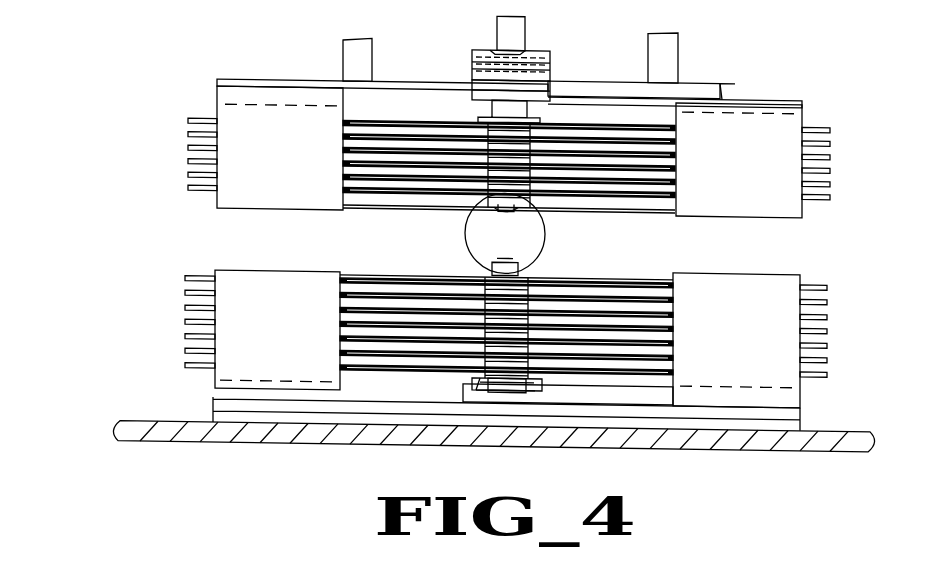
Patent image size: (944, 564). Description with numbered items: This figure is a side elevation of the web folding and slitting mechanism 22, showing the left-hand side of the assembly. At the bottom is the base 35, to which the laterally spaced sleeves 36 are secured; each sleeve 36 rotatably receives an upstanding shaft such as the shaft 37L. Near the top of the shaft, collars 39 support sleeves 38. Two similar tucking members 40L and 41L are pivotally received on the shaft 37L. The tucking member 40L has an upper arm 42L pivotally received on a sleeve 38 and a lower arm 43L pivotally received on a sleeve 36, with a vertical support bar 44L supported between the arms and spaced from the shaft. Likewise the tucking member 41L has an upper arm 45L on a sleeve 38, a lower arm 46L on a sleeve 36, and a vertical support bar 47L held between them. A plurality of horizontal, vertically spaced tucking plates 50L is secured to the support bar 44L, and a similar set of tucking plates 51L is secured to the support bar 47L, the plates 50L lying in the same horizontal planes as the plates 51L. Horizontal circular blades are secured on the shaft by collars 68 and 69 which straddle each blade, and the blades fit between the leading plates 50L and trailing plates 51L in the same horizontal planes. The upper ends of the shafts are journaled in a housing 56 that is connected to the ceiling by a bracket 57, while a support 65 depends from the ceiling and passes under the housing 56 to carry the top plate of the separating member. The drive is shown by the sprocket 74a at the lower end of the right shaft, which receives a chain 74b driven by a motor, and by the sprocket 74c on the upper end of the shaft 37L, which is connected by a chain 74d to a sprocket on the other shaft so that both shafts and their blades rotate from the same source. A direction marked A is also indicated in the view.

The web folding and slitting mechanism 22 is at (833, 58).
The base 35 is at (215, 419).
The sleeves 36 is at (516, 394).
The upstanding shaft 37L is at (512, 250).
The sleeves 38 is at (548, 86).
The collars 39 is at (492, 108).
The tucking member 40L is at (816, 99).
The tucking member 41L is at (206, 74).
The upper arm 42L is at (668, 100).
The lower arm 43L is at (655, 410).
The vertical support bar 44L is at (696, 280).
The upper arm 45L is at (283, 80).
The lower arm 46L is at (365, 396).
The vertical support bar 47L is at (320, 207).
The tucking plates 50L is at (860, 334).
The tucking plates 51L is at (185, 338).
The housing 56 is at (551, 58).
The bracket 57 is at (526, 26).
The support 65 is at (724, 84).
The collar 68 is at (500, 212).
The collar 69 is at (516, 262).
The sprocket 74a is at (544, 378).
The chain 74b is at (480, 392).
The sprocket 74c is at (498, 48).
The chain 74d is at (472, 64).
The direction A is at (282, 238).